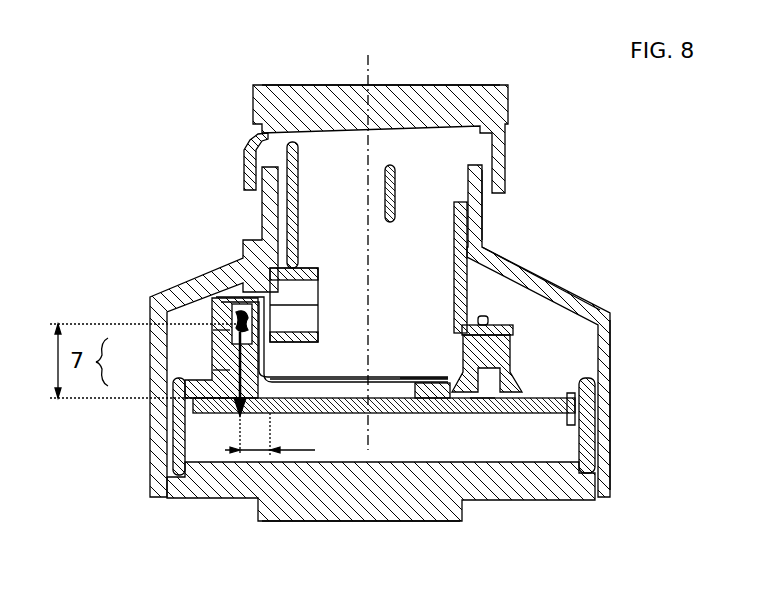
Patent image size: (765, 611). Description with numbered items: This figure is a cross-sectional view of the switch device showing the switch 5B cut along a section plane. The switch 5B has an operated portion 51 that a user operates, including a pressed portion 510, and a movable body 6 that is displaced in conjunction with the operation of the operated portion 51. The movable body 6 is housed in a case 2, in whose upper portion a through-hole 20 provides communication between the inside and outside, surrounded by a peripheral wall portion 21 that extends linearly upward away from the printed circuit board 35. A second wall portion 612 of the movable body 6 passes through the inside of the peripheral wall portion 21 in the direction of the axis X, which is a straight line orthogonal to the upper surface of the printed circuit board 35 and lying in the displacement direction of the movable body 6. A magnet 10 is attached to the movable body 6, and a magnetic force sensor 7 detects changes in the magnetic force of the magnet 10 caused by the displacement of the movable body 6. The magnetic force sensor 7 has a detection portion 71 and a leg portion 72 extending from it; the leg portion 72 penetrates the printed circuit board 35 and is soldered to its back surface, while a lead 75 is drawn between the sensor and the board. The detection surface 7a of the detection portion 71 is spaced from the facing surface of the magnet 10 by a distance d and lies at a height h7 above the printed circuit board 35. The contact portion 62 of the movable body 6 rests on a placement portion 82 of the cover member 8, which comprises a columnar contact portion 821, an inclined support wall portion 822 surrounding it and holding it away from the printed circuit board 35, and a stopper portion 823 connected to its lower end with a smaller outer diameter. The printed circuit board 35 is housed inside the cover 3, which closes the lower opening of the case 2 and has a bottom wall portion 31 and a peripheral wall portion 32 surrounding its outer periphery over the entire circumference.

The switch 5B is at (165, 95).
The axis X is at (365, 236).
The operated portion 51 is at (508, 82).
The pressed portion 510 is at (411, 86).
The movable body 6 is at (250, 236).
The second wall portion 612 is at (298, 200).
The case 2 is at (580, 300).
The peripheral wall portion 21 is at (483, 204).
The through-hole 20 is at (484, 246).
The magnet 10 is at (320, 290).
The magnetic force sensor 7 is at (210, 290).
The detection portion 71 is at (166, 345).
The leg portion 72 is at (166, 370).
The lead wire 75 is at (195, 420).
The detection surface 7a is at (262, 343).
The placement portion 82 is at (380, 330).
The contact portion 821 is at (458, 340).
The support wall portion 822 is at (455, 378).
The stopper portion 823 is at (482, 378).
The contact portion 62 is at (514, 332).
The printed circuit board 35 is at (396, 413).
The peripheral wall portion 32 is at (602, 435).
The cover member 8 is at (558, 393).
The cover 3 is at (580, 500).
The bottom wall portion 31 is at (340, 522).
The height h7 is at (131, 361).
The distance d is at (270, 434).